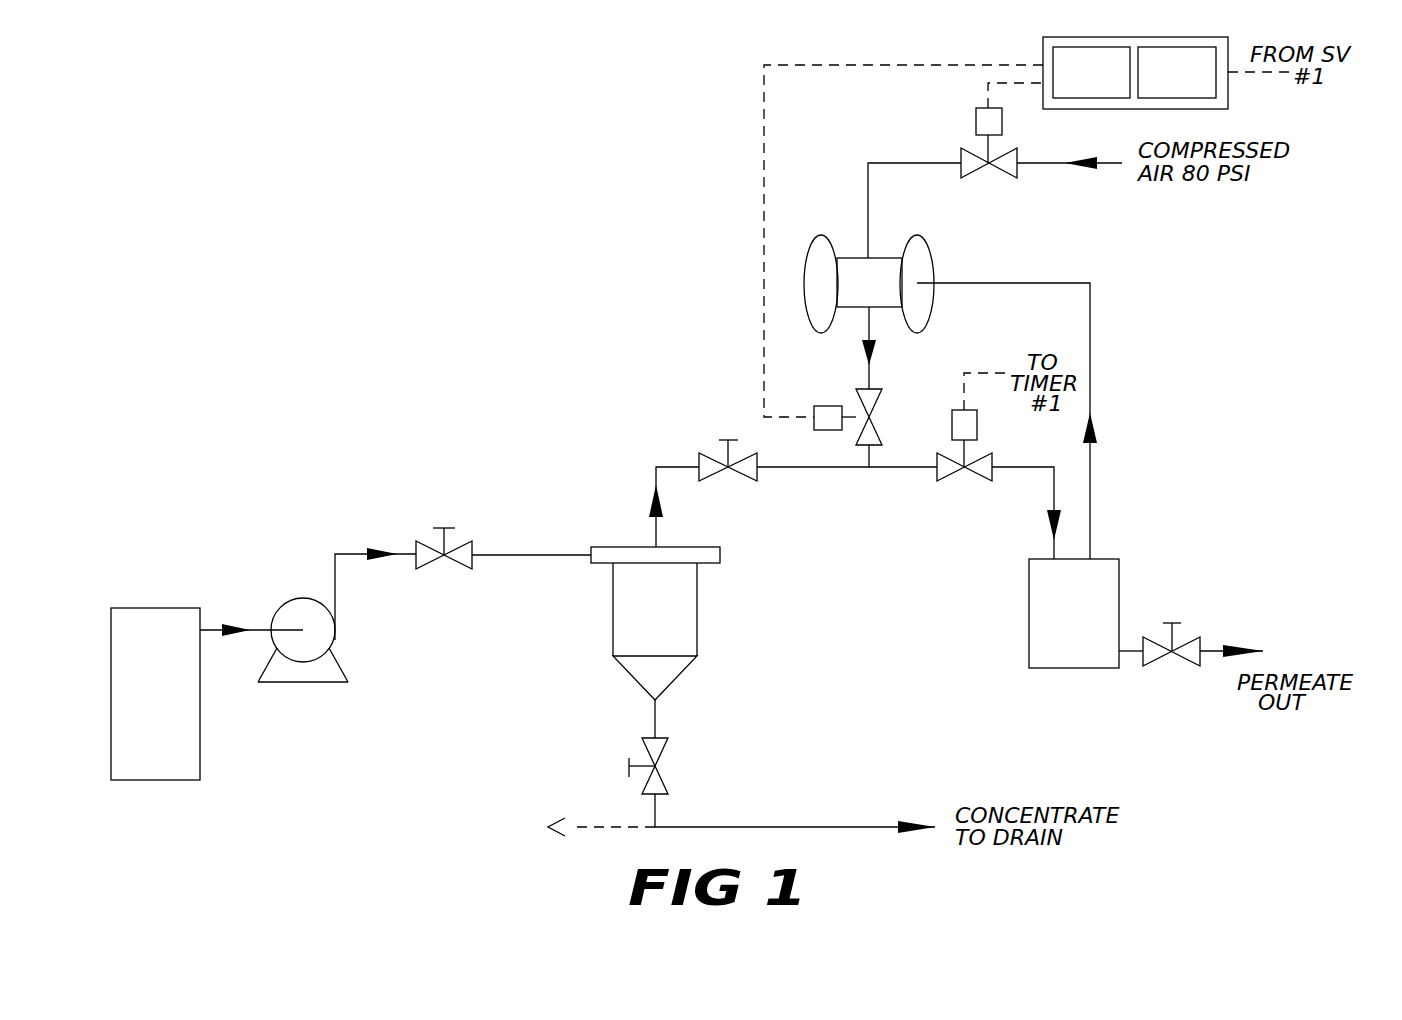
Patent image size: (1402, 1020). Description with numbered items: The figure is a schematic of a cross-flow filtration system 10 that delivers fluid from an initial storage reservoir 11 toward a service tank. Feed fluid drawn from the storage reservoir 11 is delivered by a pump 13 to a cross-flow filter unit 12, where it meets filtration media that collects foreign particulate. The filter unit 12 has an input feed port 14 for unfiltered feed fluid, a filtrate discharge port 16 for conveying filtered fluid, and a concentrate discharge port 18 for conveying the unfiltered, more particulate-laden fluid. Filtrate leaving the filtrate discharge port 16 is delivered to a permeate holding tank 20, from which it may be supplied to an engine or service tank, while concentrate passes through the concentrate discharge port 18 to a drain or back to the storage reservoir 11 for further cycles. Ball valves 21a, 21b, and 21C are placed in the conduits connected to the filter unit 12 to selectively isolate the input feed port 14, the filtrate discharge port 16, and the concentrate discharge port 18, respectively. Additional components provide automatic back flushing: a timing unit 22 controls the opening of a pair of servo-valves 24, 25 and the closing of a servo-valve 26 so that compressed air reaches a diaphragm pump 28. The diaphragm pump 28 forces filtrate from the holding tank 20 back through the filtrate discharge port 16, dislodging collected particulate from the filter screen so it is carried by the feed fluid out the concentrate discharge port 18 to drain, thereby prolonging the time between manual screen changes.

The cross-flow filtration system 10 is at (468, 293).
The storage reservoir 11 is at (183, 763).
The cross-flow filter unit 12 is at (692, 638).
The pump 13 is at (327, 667).
The input feed port 14 is at (580, 560).
The filtrate discharge port 16 is at (680, 538).
The concentrate discharge port 18 is at (640, 708).
The permeate holding tank 20 is at (1042, 627).
The ball valve 21a is at (472, 563).
The ball valve 21b is at (758, 473).
The ball valve 21C is at (665, 783).
The timing unit 22 is at (1042, 52).
The servo-valve 24 is at (960, 155).
The servo-valve 25 is at (873, 395).
The servo-valve 26 is at (937, 480).
The diaphragm pump 28 is at (922, 308).